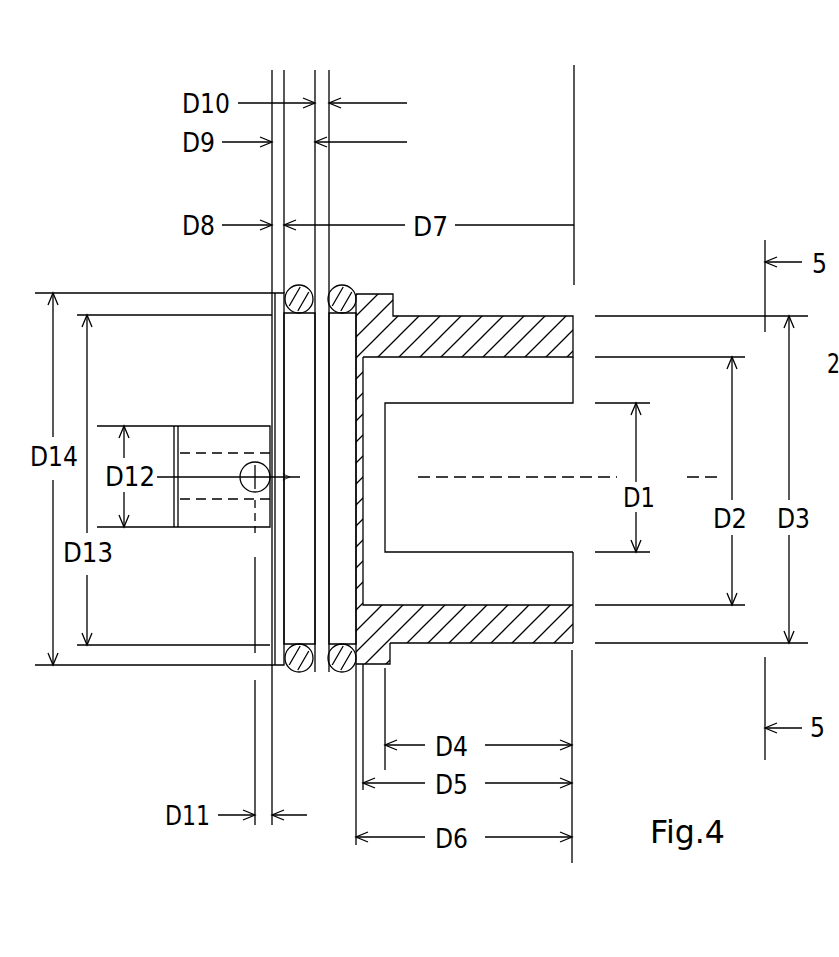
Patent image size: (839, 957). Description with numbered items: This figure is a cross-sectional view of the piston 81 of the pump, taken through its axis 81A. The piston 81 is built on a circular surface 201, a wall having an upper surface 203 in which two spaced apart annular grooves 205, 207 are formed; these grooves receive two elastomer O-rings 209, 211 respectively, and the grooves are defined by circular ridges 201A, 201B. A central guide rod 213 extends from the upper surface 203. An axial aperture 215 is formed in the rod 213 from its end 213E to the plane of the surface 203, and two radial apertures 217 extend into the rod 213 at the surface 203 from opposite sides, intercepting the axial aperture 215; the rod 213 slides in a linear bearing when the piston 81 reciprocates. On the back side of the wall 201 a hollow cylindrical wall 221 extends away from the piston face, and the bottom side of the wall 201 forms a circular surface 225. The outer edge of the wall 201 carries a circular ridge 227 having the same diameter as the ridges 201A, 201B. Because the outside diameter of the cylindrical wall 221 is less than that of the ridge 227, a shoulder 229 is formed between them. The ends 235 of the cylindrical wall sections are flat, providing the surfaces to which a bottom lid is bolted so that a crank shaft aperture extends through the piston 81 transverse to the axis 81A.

The piston 81 is at (568, 348).
The axis 81A is at (698, 477).
The circular surface 201 is at (325, 683).
The circular ridge 201A is at (322, 290).
The circular ridge 201B is at (273, 293).
The upper surface 203 is at (272, 625).
The annular groove 205 is at (298, 367).
The annular groove 207 is at (340, 348).
The elastomer O-ring 209 is at (297, 287).
The elastomer O-ring 211 is at (340, 283).
The central guide rod 213 is at (242, 528).
The end of the rod 213E is at (174, 505).
The axial aperture 215 is at (173, 447).
The radial apertures 217 is at (247, 468).
The hollow cylindrical wall 221 is at (522, 316).
The circular surface 225 is at (365, 563).
The circular ridge 227 is at (390, 672).
The shoulder 229 is at (395, 655).
The ends of the wall sections 235 is at (573, 617).